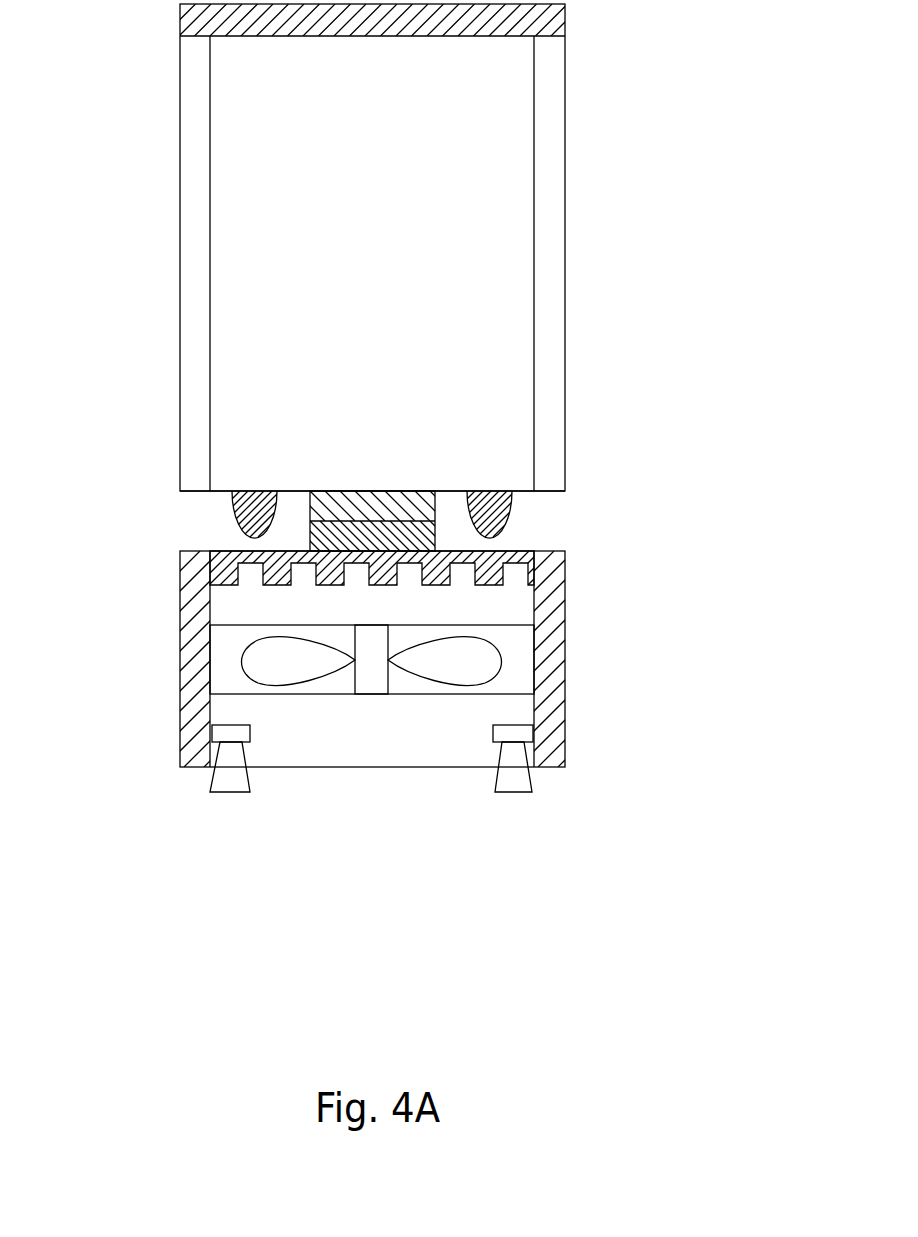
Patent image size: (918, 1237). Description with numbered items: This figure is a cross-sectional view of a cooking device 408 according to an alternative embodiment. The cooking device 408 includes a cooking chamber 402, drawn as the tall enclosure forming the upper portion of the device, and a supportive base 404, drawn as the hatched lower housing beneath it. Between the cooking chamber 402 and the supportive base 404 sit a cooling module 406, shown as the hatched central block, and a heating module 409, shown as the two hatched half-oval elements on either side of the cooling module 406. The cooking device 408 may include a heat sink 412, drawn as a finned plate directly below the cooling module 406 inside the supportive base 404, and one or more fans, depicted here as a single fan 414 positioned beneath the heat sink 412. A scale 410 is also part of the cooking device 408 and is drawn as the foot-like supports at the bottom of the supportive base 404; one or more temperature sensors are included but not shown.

The cooking chamber 402 is at (513, 152).
The supportive base 404 is at (200, 596).
The cooling module 406 is at (435, 538).
The cooking device 408 is at (596, 891).
The heating module 409 is at (510, 505).
The scale 410 is at (498, 737).
The heat sink 412 is at (505, 578).
The fan 414 is at (500, 660).